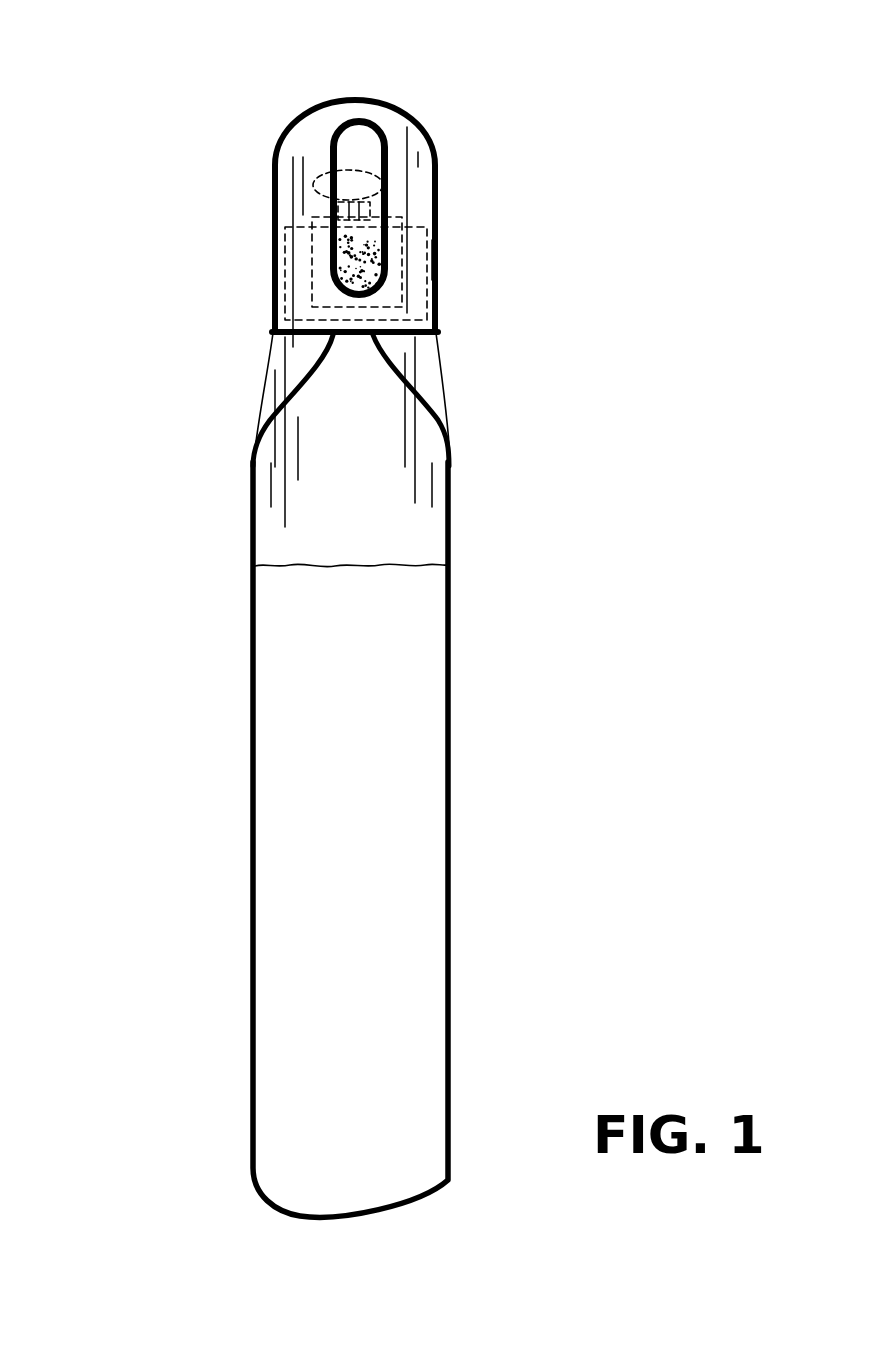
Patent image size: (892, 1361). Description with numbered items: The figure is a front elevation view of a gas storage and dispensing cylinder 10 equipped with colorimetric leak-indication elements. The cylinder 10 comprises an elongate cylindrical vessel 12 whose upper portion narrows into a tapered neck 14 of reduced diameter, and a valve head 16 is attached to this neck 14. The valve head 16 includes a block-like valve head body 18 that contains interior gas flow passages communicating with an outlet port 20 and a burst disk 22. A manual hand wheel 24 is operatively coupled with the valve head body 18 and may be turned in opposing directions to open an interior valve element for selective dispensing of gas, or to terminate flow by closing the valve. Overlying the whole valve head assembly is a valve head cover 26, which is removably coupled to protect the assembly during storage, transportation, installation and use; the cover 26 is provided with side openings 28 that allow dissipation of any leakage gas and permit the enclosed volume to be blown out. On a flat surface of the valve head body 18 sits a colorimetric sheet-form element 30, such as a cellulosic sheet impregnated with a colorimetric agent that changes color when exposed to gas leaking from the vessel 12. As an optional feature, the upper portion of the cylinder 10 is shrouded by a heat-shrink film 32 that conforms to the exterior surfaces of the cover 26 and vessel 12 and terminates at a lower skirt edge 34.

The gas storage and dispensing cylinder 10 is at (625, 483).
The elongate cylindrical vessel 12 is at (412, 780).
The tapered neck 14 is at (320, 347).
The valve head 16 is at (357, 190).
The valve head body 18 is at (430, 311).
The outlet port 20 is at (430, 263).
The burst disk 22 is at (272, 238).
The manual hand wheel 24 is at (388, 107).
The valve head cover 26 is at (275, 172).
The side openings 28 is at (353, 143).
The colorimetric sheet-form element 30 is at (367, 232).
The film 32 is at (430, 373).
The lower skirt edge 34 is at (362, 566).